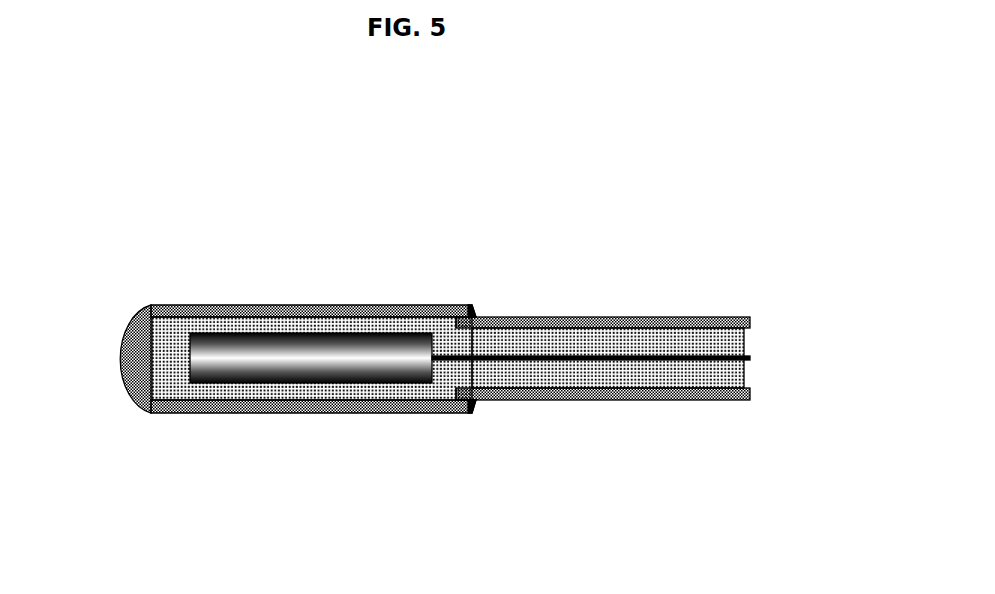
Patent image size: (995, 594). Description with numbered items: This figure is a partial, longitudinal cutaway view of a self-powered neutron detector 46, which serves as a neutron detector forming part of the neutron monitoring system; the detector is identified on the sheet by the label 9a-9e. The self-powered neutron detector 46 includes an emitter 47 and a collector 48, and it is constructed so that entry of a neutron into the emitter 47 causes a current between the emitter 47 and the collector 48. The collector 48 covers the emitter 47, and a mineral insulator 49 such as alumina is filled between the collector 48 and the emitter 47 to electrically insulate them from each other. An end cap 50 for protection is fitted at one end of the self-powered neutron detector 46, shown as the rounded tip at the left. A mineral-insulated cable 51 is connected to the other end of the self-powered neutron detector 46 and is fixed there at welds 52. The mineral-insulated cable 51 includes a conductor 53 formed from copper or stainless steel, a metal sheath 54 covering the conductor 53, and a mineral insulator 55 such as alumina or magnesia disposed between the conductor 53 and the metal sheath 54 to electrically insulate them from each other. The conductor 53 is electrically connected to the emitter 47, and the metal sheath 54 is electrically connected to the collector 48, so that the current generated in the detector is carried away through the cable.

The puncture needle / treatment device 9a-9e is at (463, 175).
The self-powered neutron detector 46 is at (250, 416).
The emitter 47 is at (252, 333).
The collector 48 is at (230, 305).
The mineral insulator 49 is at (165, 325).
The end cap 50 is at (126, 322).
The mineral-insulated cable 51 is at (598, 403).
The welds 52 is at (472, 312).
The conductor 53 is at (612, 357).
The metal sheath 54 is at (588, 316).
The mineral insulator 55 is at (503, 340).